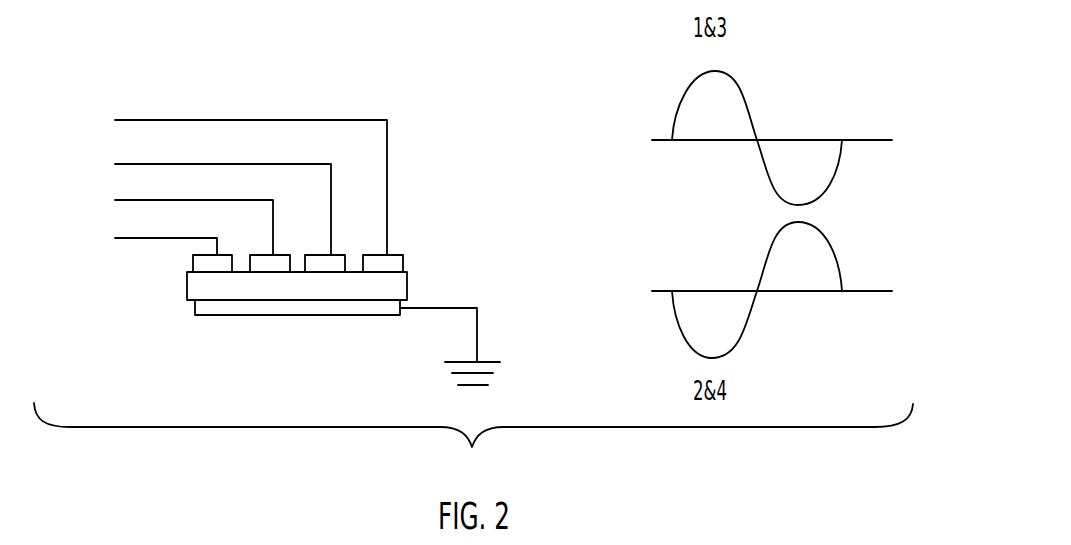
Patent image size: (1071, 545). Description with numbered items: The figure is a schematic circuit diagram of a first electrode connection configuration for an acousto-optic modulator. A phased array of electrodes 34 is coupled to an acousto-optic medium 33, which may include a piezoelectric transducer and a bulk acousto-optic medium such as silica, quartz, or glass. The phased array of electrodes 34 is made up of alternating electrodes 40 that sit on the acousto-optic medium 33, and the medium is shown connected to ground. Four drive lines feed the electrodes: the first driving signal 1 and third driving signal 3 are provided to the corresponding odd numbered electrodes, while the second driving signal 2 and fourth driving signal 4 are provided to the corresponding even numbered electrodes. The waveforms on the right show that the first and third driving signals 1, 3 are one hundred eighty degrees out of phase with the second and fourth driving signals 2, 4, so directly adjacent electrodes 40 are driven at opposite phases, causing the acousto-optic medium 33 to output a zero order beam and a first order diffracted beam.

The first driving signal 1 is at (158, 248).
The second driving signal 2 is at (187, 229).
The third driving signal 3 is at (215, 211).
The fourth driving signal 4 is at (269, 189).
The acousto-optic medium 33 is at (407, 290).
The phased array of electrodes 34 is at (293, 245).
The electrode 40 is at (395, 255).